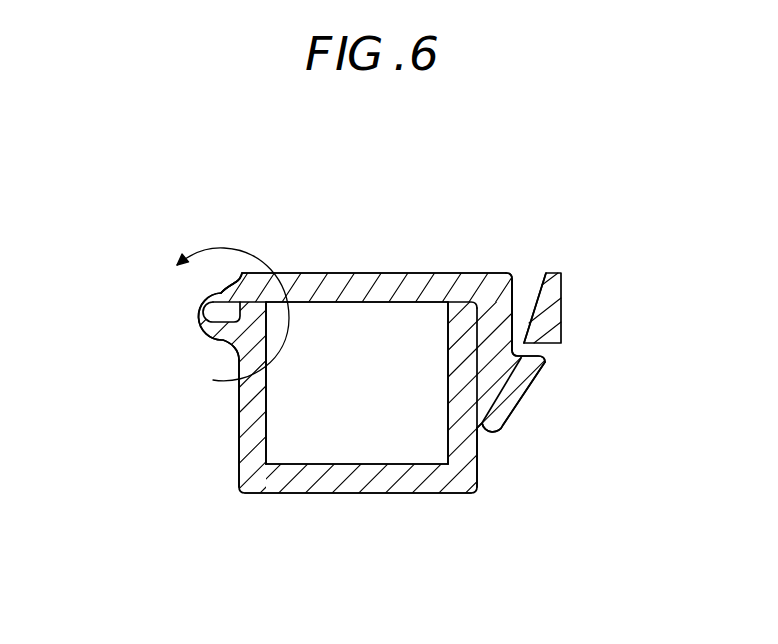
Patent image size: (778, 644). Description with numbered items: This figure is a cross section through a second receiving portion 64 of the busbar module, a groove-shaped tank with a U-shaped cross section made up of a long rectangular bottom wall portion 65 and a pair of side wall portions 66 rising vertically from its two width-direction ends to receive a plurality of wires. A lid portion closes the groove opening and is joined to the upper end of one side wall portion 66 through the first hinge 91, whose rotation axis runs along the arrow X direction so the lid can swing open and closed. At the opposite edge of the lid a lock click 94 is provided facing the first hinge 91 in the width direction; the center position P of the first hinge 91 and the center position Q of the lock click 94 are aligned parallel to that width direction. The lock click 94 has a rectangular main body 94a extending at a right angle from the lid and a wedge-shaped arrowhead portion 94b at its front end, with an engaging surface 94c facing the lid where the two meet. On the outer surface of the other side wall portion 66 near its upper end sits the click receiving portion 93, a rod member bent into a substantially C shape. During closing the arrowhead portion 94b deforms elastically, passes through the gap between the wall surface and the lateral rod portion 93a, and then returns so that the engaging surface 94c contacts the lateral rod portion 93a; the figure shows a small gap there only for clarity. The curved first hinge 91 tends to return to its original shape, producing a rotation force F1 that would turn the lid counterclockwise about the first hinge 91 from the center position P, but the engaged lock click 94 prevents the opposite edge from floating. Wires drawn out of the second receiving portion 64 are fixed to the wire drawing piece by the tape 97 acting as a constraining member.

The second receiving portion 64 is at (389, 361).
The bottom wall portion 65 is at (365, 495).
The side wall portion 66 is at (239, 452).
The tape 97 is at (352, 273).
The first hinge 91 is at (196, 316).
The click receiving portion 93 is at (562, 290).
The lateral rod portion 93a is at (552, 318).
The lock click 94 is at (541, 366).
The main body 94a is at (493, 345).
The arrowhead portion 94b is at (515, 403).
The engaging surface 94c is at (533, 356).
The rotation force F1 is at (248, 253).
The center position of the first hinge P is at (203, 298).
The center position of the lock click Q is at (514, 280).